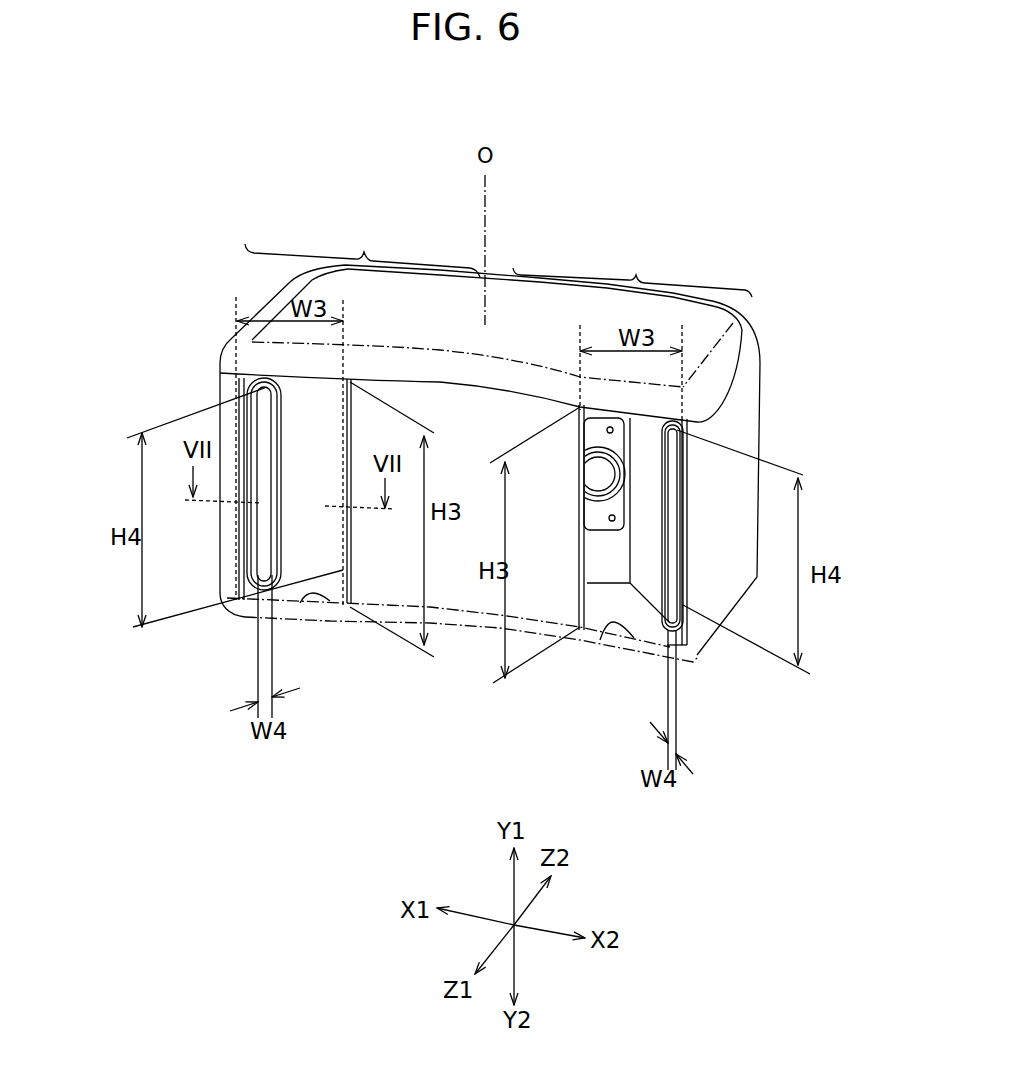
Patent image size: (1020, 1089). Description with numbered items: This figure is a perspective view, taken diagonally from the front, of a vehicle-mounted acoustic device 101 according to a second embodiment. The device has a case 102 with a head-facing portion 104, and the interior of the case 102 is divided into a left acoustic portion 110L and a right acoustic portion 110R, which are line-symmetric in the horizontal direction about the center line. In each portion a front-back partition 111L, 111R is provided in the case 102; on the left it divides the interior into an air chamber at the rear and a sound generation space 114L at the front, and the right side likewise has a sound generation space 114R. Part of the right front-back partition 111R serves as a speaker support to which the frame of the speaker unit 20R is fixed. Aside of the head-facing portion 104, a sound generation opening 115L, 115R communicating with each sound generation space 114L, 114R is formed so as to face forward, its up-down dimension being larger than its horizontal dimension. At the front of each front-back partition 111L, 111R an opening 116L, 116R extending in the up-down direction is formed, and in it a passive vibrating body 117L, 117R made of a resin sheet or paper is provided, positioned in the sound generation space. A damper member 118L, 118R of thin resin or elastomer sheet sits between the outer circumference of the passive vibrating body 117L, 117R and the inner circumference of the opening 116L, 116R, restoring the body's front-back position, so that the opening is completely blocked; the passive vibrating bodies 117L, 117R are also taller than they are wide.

The vehicle-mounted acoustic device 101 is at (333, 195).
The case 102 is at (740, 412).
The head-facing portion 104 is at (453, 590).
The left acoustic portion 110L is at (362, 249).
The right acoustic portion 110R is at (632, 267).
The front-back partition 111L is at (310, 426).
The front-back partition 111R is at (651, 597).
The sound generation space 114L is at (322, 531).
The sound generation space 114R is at (602, 553).
The sound generation opening 115L is at (317, 597).
The sound generation opening 115R is at (604, 630).
The opening 116L is at (284, 446).
The opening 116R is at (686, 604).
The passive vibrating body 117L is at (265, 512).
The passive vibrating body 117R is at (668, 485).
The damper member 118L is at (258, 557).
The damper member 118R is at (661, 580).
The speaker unit 20R is at (588, 477).